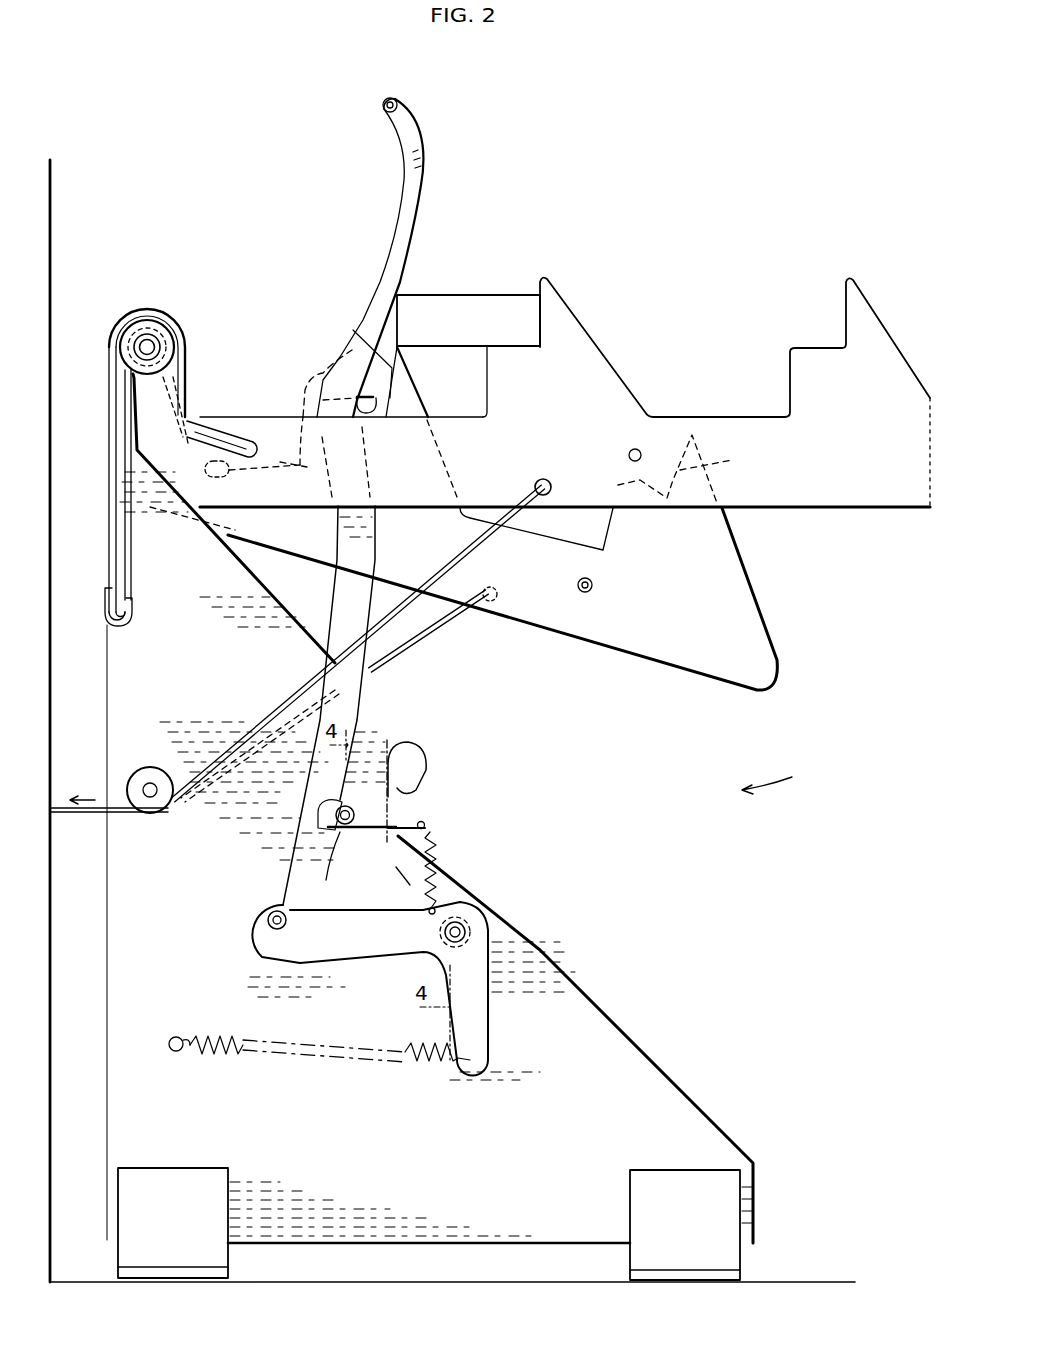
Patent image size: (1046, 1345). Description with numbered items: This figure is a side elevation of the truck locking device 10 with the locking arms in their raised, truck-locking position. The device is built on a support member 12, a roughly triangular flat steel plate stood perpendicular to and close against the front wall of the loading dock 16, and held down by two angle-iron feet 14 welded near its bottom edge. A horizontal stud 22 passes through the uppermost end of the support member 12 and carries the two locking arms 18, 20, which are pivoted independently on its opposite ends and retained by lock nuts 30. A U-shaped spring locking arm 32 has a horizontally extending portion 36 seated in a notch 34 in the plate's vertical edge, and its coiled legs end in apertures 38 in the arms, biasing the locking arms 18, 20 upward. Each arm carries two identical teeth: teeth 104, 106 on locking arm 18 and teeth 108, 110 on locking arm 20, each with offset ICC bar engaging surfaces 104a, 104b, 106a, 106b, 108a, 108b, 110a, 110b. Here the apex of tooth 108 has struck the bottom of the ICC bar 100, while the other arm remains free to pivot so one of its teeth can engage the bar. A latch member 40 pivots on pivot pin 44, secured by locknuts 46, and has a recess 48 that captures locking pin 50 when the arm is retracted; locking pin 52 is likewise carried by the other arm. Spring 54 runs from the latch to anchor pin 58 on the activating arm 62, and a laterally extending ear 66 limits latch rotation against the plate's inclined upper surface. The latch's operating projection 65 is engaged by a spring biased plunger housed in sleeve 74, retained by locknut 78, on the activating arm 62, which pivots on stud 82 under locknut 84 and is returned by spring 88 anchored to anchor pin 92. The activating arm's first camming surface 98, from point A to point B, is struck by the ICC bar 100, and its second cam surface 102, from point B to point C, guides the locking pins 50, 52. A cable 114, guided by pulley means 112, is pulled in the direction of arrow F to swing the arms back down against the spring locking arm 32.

The truck locking device 10 is at (779, 780).
The support member 12 is at (600, 1020).
The feet 14 is at (224, 1190).
The loading dock 16 is at (52, 302).
The locking arm 18 is at (872, 493).
The locking arm 20 is at (682, 652).
The stud 22 is at (165, 328).
The lock nuts 30 is at (142, 325).
The spring locking arm 32 is at (113, 497).
The notch 34 is at (140, 605).
The horizontally extending portion 36 is at (117, 622).
The apertures 38 is at (222, 425).
The latch member 40 is at (365, 838).
The pivot pin 44 is at (338, 806).
The locknuts 46 is at (318, 812).
The recess 48 is at (427, 790).
The locking pin 50 is at (628, 456).
The locking pin 52 is at (592, 585).
The spring 54 is at (440, 843).
The anchor pin 58 is at (438, 905).
The activating arm 62 is at (352, 603).
The operating projection 65 is at (300, 825).
The laterally extending ear 66 is at (393, 880).
The sleeve 74 is at (266, 920).
The locknut 78 is at (270, 905).
The stud 82 is at (467, 930).
The locknut 84 is at (468, 918).
The spring 88 is at (243, 1052).
The anchor pin 92 is at (170, 1038).
The first camming surface 98 is at (413, 240).
The ICC bar 100 is at (448, 308).
The second cam surface 102 is at (373, 565).
The tooth 104 is at (610, 378).
The ICC bar engaging surface 104a is at (486, 368).
The ICC bar engaging surface 104b is at (540, 306).
The tooth 106 is at (890, 362).
The ICC bar engaging surface 106a is at (787, 375).
The ICC bar engaging surface 106b is at (845, 295).
The tooth 108 is at (420, 410).
The ICC bar engaging surface 108a is at (320, 378).
The ICC bar engaging surface 108b is at (362, 350).
The tooth 110 is at (742, 602).
The ICC bar engaging surface 110a is at (606, 512).
The ICC bar engaging surface 110b is at (696, 469).
The pulley means 112 is at (145, 770).
The cable 114 is at (88, 815).
The point A is at (429, 120).
The point B is at (374, 413).
The point C is at (327, 862).
The arrow F is at (82, 790).